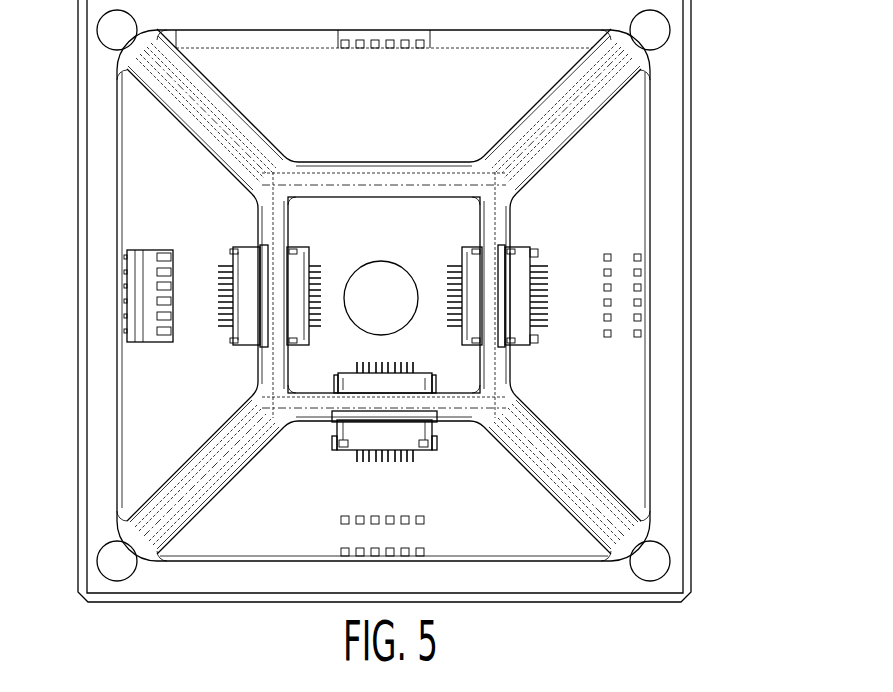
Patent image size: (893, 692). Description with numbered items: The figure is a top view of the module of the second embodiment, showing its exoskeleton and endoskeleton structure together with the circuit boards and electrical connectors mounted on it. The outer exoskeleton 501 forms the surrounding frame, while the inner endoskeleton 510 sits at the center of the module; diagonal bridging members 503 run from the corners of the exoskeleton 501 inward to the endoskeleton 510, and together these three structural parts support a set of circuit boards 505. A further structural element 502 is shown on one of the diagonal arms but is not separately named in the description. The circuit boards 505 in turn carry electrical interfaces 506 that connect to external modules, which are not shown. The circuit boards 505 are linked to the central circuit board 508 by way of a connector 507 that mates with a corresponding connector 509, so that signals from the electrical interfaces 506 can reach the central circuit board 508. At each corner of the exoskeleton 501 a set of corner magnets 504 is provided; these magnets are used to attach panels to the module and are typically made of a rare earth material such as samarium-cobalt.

The exoskeleton 501 is at (688, 246).
The support rib 502 is at (592, 495).
The bridging members 503 is at (600, 106).
The corner magnets 504 is at (670, 28).
The circuit boards 505 is at (627, 365).
The electrical interfaces 506 is at (150, 251).
The connector 507 is at (538, 260).
The central circuit board 508 is at (300, 263).
The corresponding connector 509 is at (464, 263).
The endoskeleton 510 is at (510, 380).